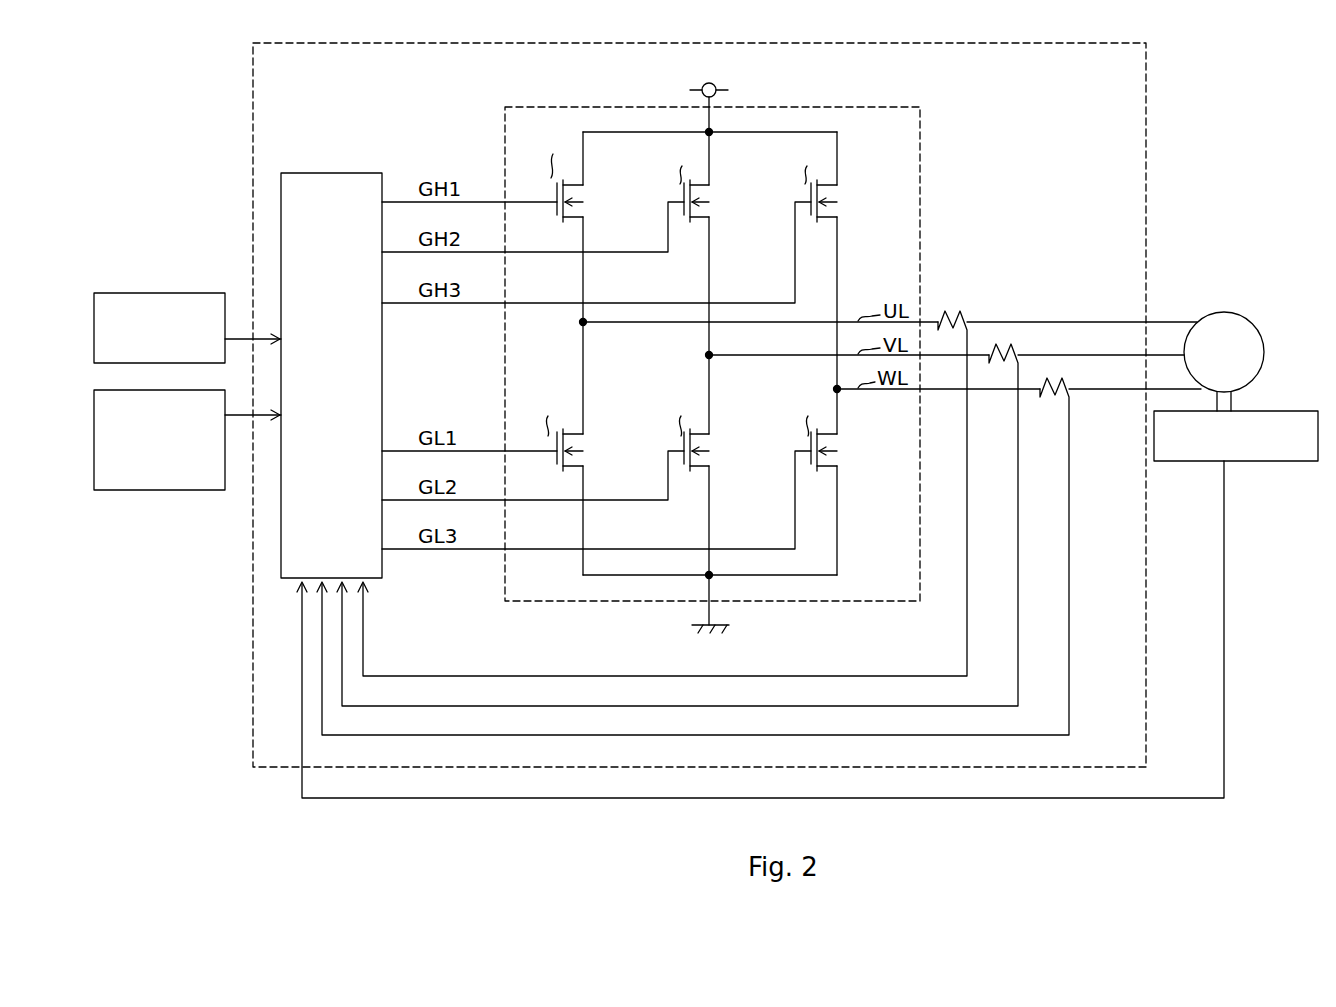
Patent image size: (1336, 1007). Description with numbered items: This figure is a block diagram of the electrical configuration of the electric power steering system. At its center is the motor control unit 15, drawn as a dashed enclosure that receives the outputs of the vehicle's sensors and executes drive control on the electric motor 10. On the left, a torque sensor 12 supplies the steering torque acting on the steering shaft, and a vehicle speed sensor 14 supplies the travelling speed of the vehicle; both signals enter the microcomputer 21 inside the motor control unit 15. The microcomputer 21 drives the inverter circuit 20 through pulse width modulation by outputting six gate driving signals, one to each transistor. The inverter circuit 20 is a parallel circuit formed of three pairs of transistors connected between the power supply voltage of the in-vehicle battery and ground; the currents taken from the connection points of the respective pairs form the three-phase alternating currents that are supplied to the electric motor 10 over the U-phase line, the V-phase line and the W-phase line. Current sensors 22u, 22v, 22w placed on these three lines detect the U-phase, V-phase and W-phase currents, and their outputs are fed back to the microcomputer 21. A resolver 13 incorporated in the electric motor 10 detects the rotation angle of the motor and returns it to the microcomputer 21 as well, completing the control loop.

The electric motor 10 is at (1230, 312).
The torque sensor 12 is at (160, 292).
The resolver 13 is at (1256, 462).
The vehicle speed sensor 14 is at (157, 491).
The motor control unit 15 is at (895, 44).
The inverter circuit 20 is at (893, 108).
The microcomputer 21 is at (332, 172).
The current sensor 22u is at (962, 313).
The current sensor 22v is at (1012, 346).
The current sensor 22w is at (1063, 380).